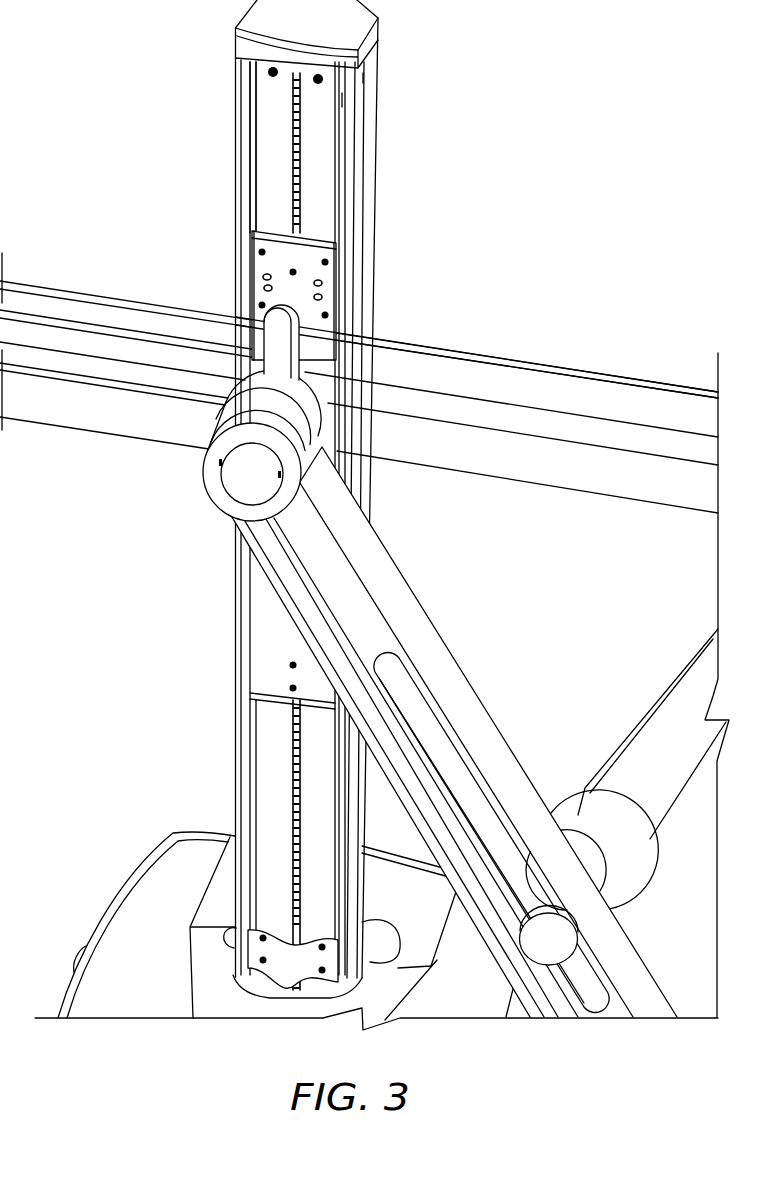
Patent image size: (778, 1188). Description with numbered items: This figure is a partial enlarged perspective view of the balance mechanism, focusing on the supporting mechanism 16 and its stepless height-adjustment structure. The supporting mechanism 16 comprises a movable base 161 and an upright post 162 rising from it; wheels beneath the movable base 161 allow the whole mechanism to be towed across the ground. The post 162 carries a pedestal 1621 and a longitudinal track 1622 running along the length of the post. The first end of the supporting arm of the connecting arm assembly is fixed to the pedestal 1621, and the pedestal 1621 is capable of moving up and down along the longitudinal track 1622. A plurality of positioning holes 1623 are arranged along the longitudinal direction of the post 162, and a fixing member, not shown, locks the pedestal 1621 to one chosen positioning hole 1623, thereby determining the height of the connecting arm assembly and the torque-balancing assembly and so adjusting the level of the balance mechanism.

The supporting mechanism 16 is at (364, 515).
The movable base 161 is at (123, 935).
The post 162 is at (429, 499).
The pedestal 1621 is at (323, 305).
The longitudinal track 1622 is at (255, 183).
The positioning holes 1623 is at (290, 117).